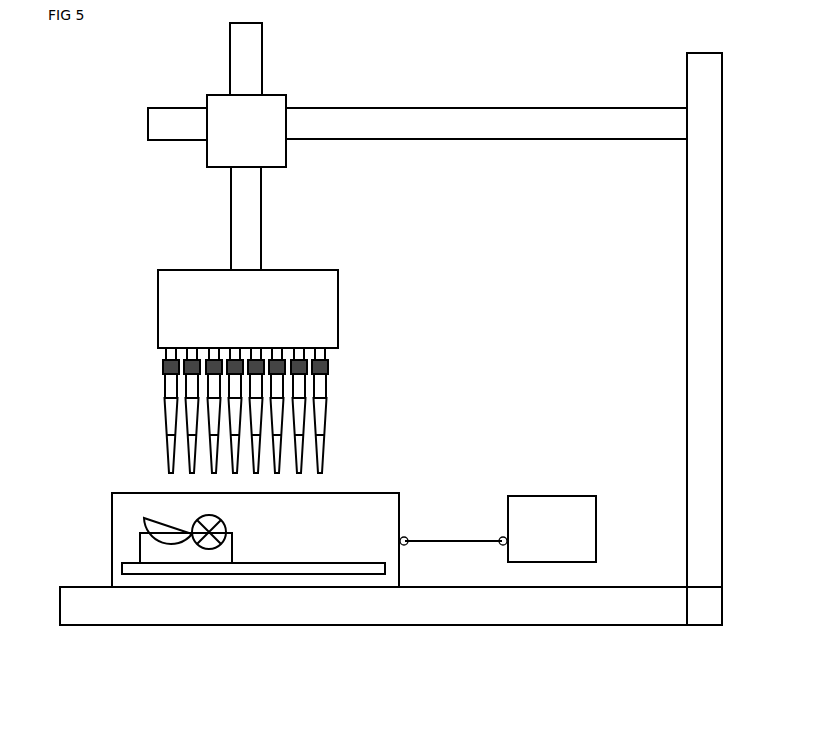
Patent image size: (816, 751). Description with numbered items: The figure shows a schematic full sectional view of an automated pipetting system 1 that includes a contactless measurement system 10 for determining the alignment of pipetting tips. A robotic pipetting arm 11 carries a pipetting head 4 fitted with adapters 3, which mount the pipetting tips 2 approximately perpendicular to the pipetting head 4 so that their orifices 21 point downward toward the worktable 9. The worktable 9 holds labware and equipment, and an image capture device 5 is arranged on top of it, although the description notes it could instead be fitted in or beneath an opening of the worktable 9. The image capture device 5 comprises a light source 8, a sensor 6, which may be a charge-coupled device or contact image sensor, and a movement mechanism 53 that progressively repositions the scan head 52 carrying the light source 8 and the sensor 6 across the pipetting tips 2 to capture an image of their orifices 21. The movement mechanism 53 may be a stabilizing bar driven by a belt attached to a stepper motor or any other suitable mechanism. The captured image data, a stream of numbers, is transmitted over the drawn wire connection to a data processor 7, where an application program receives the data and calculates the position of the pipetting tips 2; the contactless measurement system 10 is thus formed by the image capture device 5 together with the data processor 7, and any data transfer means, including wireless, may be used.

The automated pipetting system 1 is at (752, 85).
The pipetting tips 2 is at (318, 393).
The adapters 3 is at (327, 355).
The pipetting head 4 is at (300, 302).
The image capture device 5 is at (214, 588).
The sensor 6 is at (170, 535).
The data processor 7 is at (538, 515).
The light source 8 is at (208, 541).
The worktable 9 is at (497, 607).
The contactless measurement system 10 is at (537, 295).
The robotic pipetting arm 11 is at (182, 178).
The orifices 21 is at (173, 470).
The scan head 52 is at (147, 547).
The movement mechanism 53 is at (337, 572).